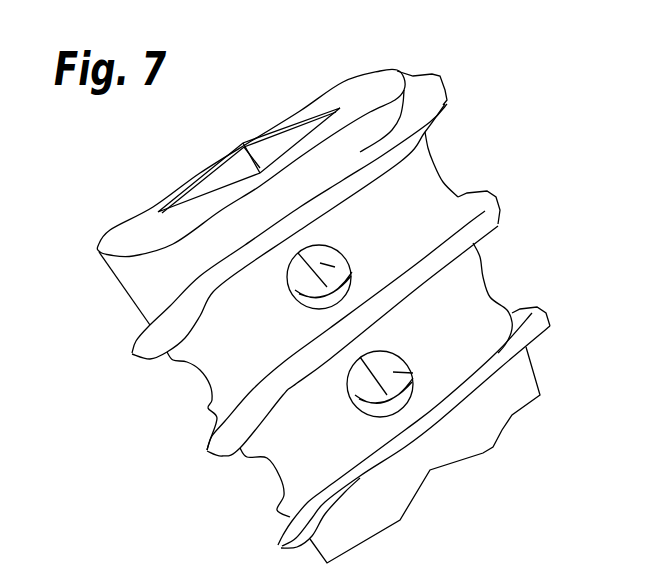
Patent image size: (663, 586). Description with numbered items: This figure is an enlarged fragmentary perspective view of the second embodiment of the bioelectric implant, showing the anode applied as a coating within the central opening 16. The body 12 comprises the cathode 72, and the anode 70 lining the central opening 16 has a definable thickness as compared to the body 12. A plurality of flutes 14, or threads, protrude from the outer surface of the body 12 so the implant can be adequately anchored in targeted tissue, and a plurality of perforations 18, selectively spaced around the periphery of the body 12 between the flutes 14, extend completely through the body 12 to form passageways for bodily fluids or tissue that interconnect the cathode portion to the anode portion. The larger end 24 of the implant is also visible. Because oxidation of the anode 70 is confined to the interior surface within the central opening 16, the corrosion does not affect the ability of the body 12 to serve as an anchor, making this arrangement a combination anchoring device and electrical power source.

The body 12 is at (120, 313).
The flutes/threads 14 is at (430, 107).
The central opening 16 is at (257, 141).
The perforations 18 is at (440, 167).
The larger end 24 is at (110, 221).
The anode 70 is at (302, 112).
The cathode 72 is at (147, 275).